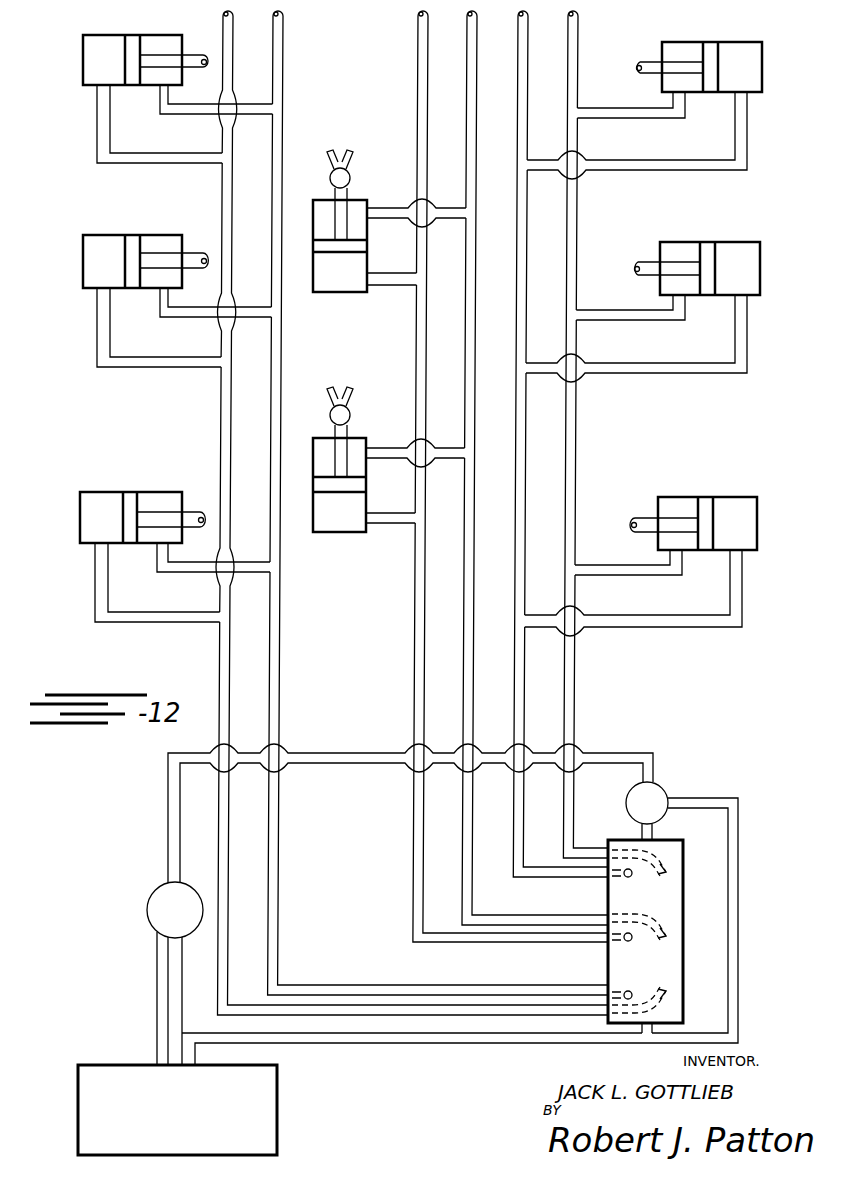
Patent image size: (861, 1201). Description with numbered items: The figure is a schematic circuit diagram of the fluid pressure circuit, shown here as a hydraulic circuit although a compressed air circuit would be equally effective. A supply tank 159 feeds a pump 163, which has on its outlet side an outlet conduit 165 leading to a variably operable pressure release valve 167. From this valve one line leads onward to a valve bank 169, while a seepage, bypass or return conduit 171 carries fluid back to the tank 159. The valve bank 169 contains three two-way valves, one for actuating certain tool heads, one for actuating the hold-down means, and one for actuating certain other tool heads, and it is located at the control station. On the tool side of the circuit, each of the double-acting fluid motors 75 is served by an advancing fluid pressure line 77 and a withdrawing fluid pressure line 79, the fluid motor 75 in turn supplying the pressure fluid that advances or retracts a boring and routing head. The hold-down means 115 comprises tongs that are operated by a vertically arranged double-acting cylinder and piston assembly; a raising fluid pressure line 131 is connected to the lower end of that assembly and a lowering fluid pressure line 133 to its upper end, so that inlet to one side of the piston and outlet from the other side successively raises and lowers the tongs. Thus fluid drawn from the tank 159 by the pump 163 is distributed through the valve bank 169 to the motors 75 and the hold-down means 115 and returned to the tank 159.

The double-acting fluid motor 75 is at (108, 505).
The advancing fluid pressure line 77 is at (132, 162).
The withdrawing fluid pressure line 79 is at (285, 55).
The hold-down means 115 is at (352, 422).
The raising fluid pressure line 131 is at (414, 590).
The lowering fluid pressure line 133 is at (378, 212).
The supply tank 159 is at (260, 1127).
The pump 163 is at (160, 898).
The outlet conduit 165 is at (345, 764).
The pressure release valve 167 is at (663, 785).
The valve bank 169 is at (663, 953).
The return conduit 171 is at (738, 875).